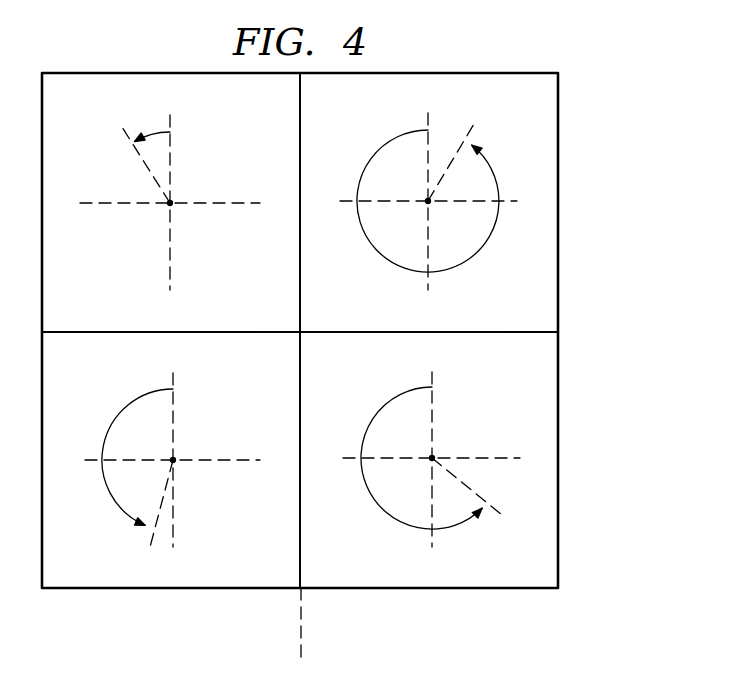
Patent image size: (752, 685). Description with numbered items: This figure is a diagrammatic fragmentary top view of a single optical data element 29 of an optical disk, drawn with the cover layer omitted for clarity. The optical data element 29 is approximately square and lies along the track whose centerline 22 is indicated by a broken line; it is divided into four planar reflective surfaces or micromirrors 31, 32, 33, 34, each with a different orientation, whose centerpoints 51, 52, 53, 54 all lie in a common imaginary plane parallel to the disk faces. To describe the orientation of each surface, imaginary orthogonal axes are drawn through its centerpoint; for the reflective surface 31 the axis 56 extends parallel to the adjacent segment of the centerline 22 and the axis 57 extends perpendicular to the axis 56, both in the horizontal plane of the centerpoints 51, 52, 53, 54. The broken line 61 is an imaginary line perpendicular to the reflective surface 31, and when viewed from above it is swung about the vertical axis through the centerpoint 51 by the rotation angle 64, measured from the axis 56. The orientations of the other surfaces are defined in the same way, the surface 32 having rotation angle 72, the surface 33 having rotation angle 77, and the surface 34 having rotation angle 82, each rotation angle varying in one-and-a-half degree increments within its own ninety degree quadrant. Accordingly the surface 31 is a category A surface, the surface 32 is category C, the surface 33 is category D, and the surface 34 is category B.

The track centerline 22 is at (301, 617).
The optical data element 29 is at (353, 342).
The reflective surface 31 is at (106, 78).
The reflective surface 32 is at (112, 582).
The reflective surface 33 is at (494, 580).
The reflective surface 34 is at (490, 78).
The centerpoint 51 is at (173, 200).
The centerpoint 52 is at (175, 459).
The centerpoint 53 is at (434, 457).
The centerpoint 54 is at (426, 204).
The axis 56 is at (168, 252).
The axis 57 is at (217, 205).
The imaginary line perpendicular to reflective surface 61 is at (143, 167).
The rotation angle 64 is at (155, 132).
The rotation angle 72 is at (130, 402).
The rotation angle 77 is at (397, 397).
The rotation angle 82 is at (387, 143).